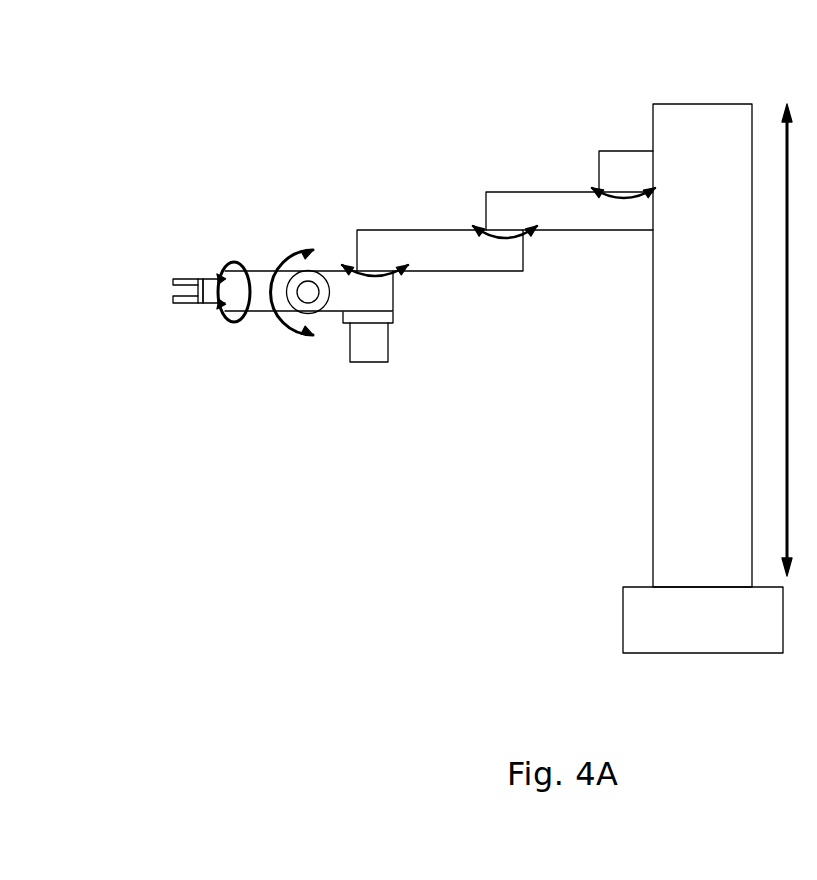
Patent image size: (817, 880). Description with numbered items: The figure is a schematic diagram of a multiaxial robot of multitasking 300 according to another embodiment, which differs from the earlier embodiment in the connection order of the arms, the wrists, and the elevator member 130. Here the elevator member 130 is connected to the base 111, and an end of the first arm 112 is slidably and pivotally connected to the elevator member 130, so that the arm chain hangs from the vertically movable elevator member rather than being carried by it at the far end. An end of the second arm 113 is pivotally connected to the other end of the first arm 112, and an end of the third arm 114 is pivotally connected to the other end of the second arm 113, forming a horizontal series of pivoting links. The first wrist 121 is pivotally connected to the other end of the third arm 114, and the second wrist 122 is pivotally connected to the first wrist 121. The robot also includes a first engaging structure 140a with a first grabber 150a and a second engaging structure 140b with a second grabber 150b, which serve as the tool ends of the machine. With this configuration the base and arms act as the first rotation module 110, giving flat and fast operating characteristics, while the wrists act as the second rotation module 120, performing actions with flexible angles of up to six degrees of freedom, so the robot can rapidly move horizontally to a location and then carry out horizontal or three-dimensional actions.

The multiaxial robot of multitasking 300 is at (112, 33).
The first rotation module 110 is at (504, 441).
The base 111 is at (637, 610).
The first arm 112 is at (570, 215).
The second arm 113 is at (505, 253).
The third arm 114 is at (337, 311).
The second rotation module 120 is at (275, 201).
The first wrist 121 is at (265, 287).
The second wrist 122 is at (208, 280).
The elevator member 130 is at (692, 117).
The first engaging structure 140a is at (200, 280).
The first grabber 150a is at (187, 280).
The second engaging structure 140b is at (395, 315).
The second grabber 150b is at (373, 343).